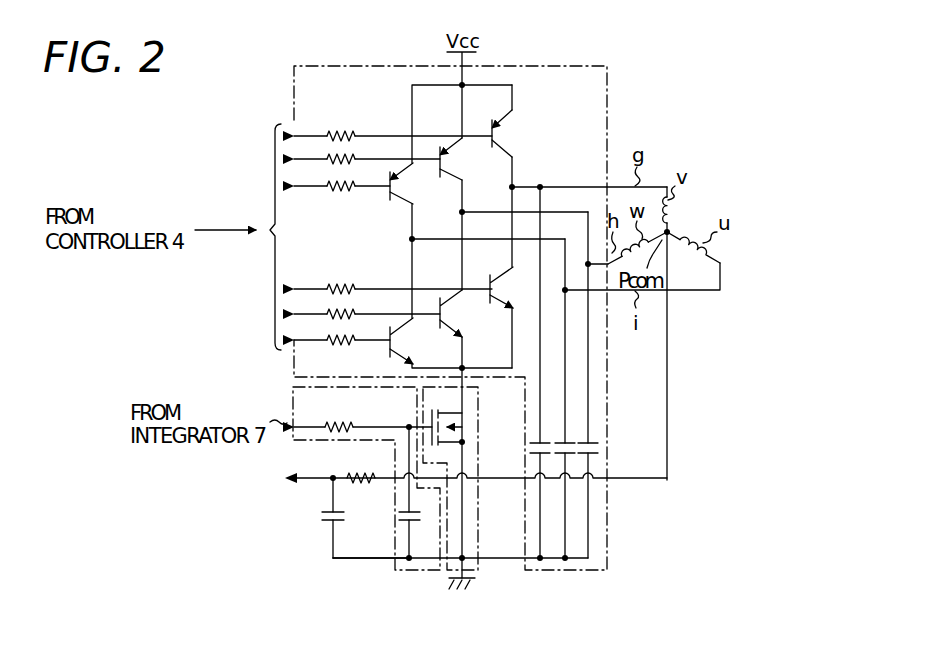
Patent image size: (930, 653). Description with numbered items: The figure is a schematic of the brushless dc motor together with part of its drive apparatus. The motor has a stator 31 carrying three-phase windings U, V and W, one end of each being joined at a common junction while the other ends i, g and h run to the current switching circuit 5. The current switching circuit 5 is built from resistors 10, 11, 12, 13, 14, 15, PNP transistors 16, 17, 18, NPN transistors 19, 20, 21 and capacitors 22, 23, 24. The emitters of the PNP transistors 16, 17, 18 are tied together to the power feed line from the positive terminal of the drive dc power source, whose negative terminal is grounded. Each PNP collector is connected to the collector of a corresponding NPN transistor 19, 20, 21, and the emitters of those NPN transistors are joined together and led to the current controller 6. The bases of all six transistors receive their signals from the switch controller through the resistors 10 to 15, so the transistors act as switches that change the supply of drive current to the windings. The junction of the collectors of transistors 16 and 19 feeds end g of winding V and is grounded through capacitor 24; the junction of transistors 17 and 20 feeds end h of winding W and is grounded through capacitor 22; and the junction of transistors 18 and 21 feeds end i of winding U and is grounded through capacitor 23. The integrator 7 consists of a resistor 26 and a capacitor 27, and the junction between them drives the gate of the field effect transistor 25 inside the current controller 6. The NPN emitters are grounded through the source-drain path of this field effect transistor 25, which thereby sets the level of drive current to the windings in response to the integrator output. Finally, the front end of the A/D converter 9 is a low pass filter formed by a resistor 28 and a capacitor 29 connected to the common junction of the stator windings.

The current switching circuit 5 is at (587, 63).
The current controller 6 is at (447, 576).
The integrator 7 is at (392, 572).
The A/D converter 9 is at (326, 533).
The resistor 10 is at (338, 131).
The resistor 11 is at (357, 155).
The resistor 12 is at (340, 190).
The resistor 13 is at (342, 283).
The resistor 14 is at (355, 310).
The resistor 15 is at (342, 347).
The PNP transistor 16 is at (508, 140).
The PNP transistor 17 is at (455, 165).
The PNP transistor 18 is at (403, 192).
The NPN transistor 19 is at (499, 282).
The NPN transistor 20 is at (455, 312).
The NPN transistor 21 is at (410, 340).
The capacitor 22 is at (598, 445).
The capacitor 23 is at (565, 441).
The capacitor 24 is at (531, 445).
The field effect transistor 25 is at (462, 418).
The resistor 26 is at (342, 424).
The capacitor 27 is at (413, 522).
The resistor 28 is at (367, 472).
The capacitor 29 is at (344, 512).
The stator 31 is at (678, 227).